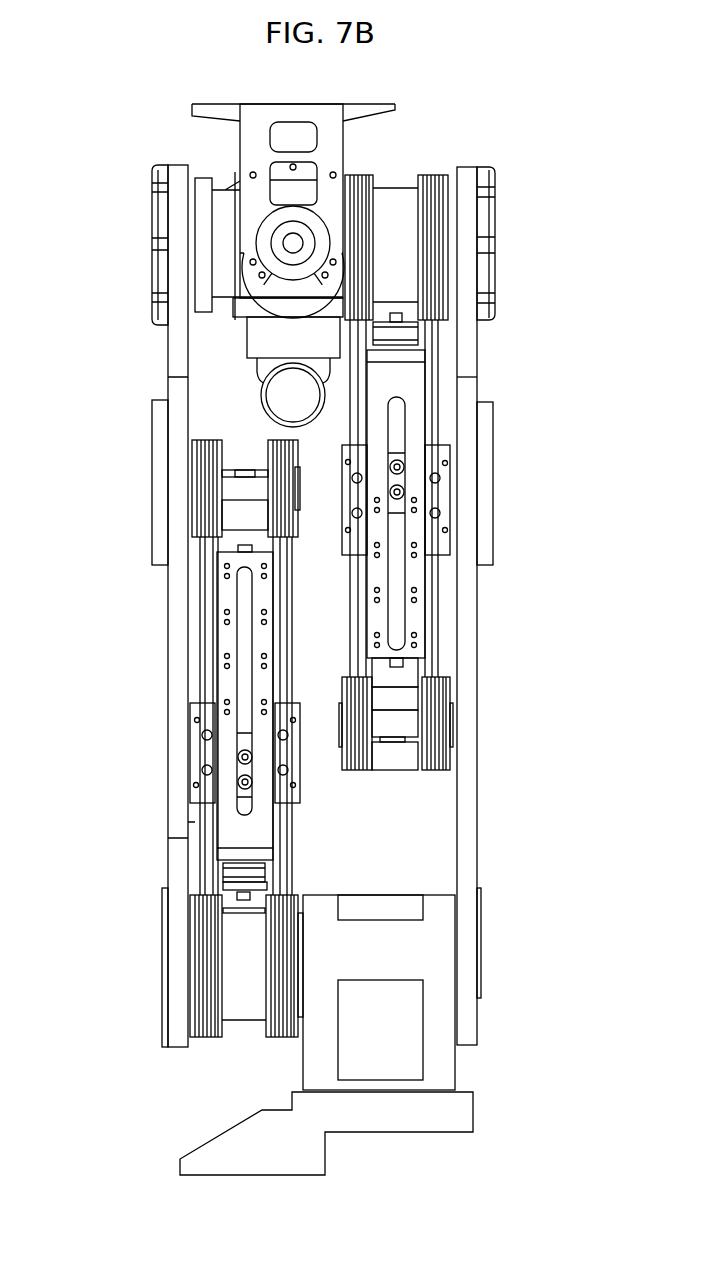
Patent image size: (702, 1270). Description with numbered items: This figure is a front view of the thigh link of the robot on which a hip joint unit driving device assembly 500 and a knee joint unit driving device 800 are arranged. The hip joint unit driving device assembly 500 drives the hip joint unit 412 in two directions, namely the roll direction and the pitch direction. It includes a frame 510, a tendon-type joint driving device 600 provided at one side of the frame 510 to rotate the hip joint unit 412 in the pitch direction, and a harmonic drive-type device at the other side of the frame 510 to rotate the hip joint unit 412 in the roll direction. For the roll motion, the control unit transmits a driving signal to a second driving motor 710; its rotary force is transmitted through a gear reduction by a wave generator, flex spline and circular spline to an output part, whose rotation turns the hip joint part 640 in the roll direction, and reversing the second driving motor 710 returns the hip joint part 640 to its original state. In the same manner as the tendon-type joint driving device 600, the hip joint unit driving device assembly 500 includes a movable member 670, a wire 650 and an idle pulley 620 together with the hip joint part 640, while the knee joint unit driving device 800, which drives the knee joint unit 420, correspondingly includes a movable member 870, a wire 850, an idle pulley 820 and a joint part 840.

The hip joint unit 412 is at (138, 232).
The hip joint unit driving device assembly 500 is at (508, 162).
The frame 510 is at (253, 297).
The hip joint part 640 is at (397, 195).
The second driving motor 710 is at (283, 395).
The wire 650 is at (440, 355).
The tendon-type joint driving device 600 is at (430, 425).
The movable member 670 is at (442, 493).
The idle pulley 620 is at (400, 722).
The idle pulley 820 is at (247, 483).
The wire 850 is at (202, 618).
The knee joint unit driving device 800 is at (220, 722).
The movable member 870 is at (198, 773).
The joint part 840 is at (240, 968).
The knee joint unit 420 is at (494, 972).